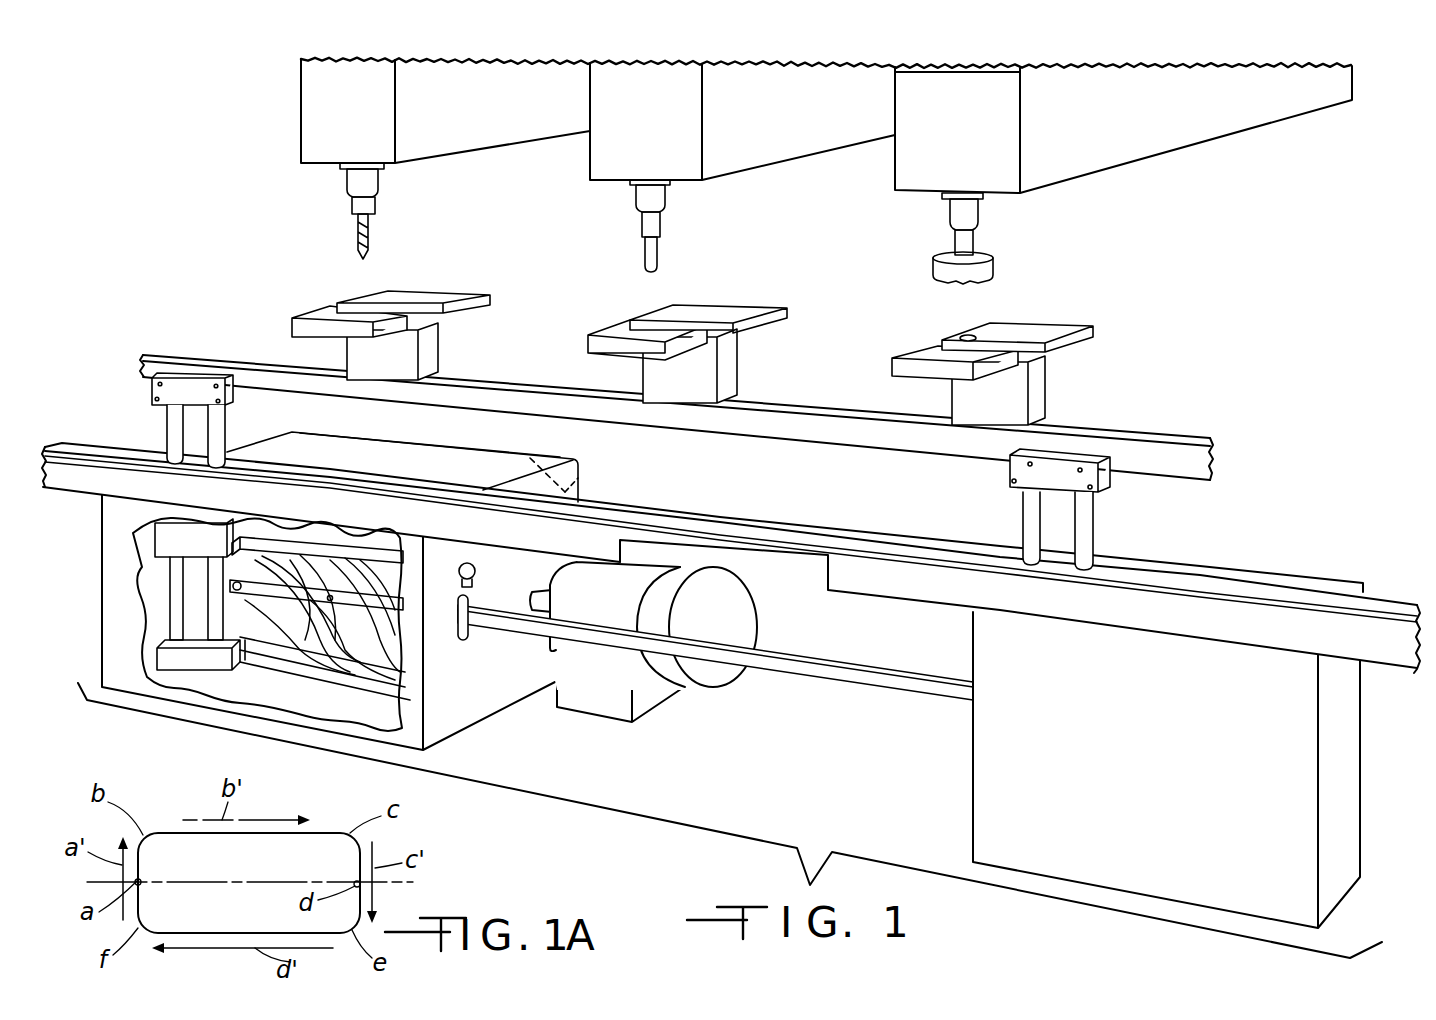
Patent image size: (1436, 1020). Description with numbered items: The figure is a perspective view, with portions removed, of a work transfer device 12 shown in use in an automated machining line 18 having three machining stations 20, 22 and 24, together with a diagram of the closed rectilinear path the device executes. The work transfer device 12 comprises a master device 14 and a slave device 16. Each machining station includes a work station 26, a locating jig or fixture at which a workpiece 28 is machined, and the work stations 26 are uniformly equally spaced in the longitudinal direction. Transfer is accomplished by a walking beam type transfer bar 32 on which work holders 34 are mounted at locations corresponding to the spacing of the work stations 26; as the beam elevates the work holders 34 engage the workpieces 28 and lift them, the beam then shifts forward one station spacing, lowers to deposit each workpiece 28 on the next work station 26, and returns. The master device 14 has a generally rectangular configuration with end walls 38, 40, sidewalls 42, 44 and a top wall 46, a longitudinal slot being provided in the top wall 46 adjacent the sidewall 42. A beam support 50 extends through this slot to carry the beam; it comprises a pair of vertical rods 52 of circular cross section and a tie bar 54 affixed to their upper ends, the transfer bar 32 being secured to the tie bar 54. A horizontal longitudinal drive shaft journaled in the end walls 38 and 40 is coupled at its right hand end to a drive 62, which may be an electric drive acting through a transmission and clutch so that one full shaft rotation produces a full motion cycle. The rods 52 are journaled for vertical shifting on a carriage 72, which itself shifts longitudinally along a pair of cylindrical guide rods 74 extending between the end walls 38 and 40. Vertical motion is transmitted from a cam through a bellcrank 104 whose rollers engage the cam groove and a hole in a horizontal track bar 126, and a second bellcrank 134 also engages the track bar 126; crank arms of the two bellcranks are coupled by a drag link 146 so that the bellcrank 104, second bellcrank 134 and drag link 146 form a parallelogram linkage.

The work transfer device 12 is at (730, 726).
The master device 14 is at (731, 558).
The slave device 16 is at (1128, 770).
The automated machining line 18 is at (826, 163).
The machining station 20 is at (299, 183).
The machining station 22 is at (609, 225).
The machining station 24 is at (920, 238).
The work station 26 is at (723, 331).
The workpiece 28 is at (715, 300).
The transfer bar 32 is at (676, 381).
The work holder 34 is at (728, 374).
The end wall 38 is at (224, 624).
The end wall 40 is at (596, 694).
The sidewall 42 is at (81, 656).
The sidewall 44 is at (417, 462).
The top wall 46 is at (430, 449).
The beam support 50 is at (632, 439).
The vertical rod 52 is at (640, 518).
The tie bar 54 is at (629, 441).
The drive 62 is at (643, 656).
The carriage 72 is at (197, 594).
The guide rod 74 is at (731, 539).
The bellcrank 104 is at (301, 629).
The track bar 126 is at (361, 618).
The second bellcrank 134 is at (355, 638).
The drag link 146 is at (715, 653).